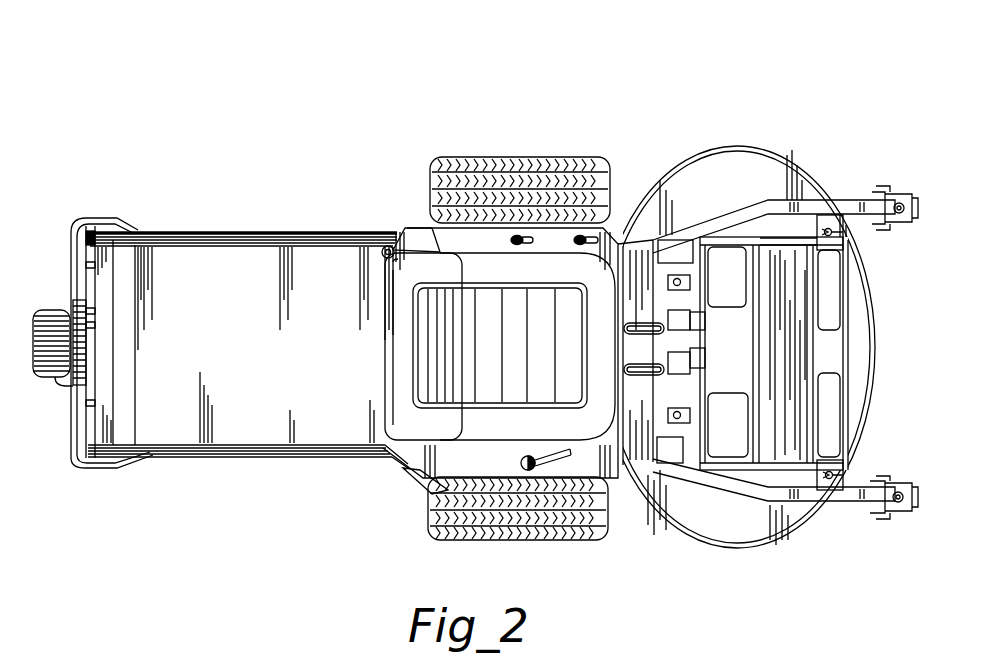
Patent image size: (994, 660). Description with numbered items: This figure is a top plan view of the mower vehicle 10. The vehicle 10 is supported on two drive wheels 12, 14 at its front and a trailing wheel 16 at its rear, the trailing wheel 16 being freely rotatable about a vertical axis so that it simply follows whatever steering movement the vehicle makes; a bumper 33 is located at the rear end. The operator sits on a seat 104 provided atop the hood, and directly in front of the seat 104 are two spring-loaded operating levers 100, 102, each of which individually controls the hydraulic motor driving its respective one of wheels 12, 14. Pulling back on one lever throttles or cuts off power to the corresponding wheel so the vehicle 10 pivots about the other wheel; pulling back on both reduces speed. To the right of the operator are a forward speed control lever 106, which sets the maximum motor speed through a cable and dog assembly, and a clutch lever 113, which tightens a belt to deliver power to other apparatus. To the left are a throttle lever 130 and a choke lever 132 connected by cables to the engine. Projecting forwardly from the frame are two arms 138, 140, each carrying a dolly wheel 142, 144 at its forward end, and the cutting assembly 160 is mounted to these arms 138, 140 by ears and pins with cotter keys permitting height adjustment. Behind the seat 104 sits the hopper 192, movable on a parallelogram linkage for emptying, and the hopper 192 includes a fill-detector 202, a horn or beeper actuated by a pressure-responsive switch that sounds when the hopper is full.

The vehicle 10 is at (341, 172).
The drive wheel 12 is at (565, 158).
The drive wheel 14 is at (563, 540).
The trailing wheel 16 is at (57, 385).
The bumper 33 is at (101, 219).
The operating lever 100 is at (667, 385).
The operating lever 102 is at (667, 315).
The seat 104 is at (412, 383).
The forward speed control lever 106 is at (519, 463).
The clutch lever 113 is at (425, 490).
The throttle lever 130 is at (573, 241).
The choke lever 132 is at (508, 242).
The arm 138 is at (823, 202).
The arm 140 is at (832, 503).
The dolly wheel 142 is at (903, 226).
The dolly wheel 144 is at (892, 516).
The cutting assembly 160 is at (718, 551).
The hopper 192 is at (288, 231).
The fill-detector 202 is at (401, 230).